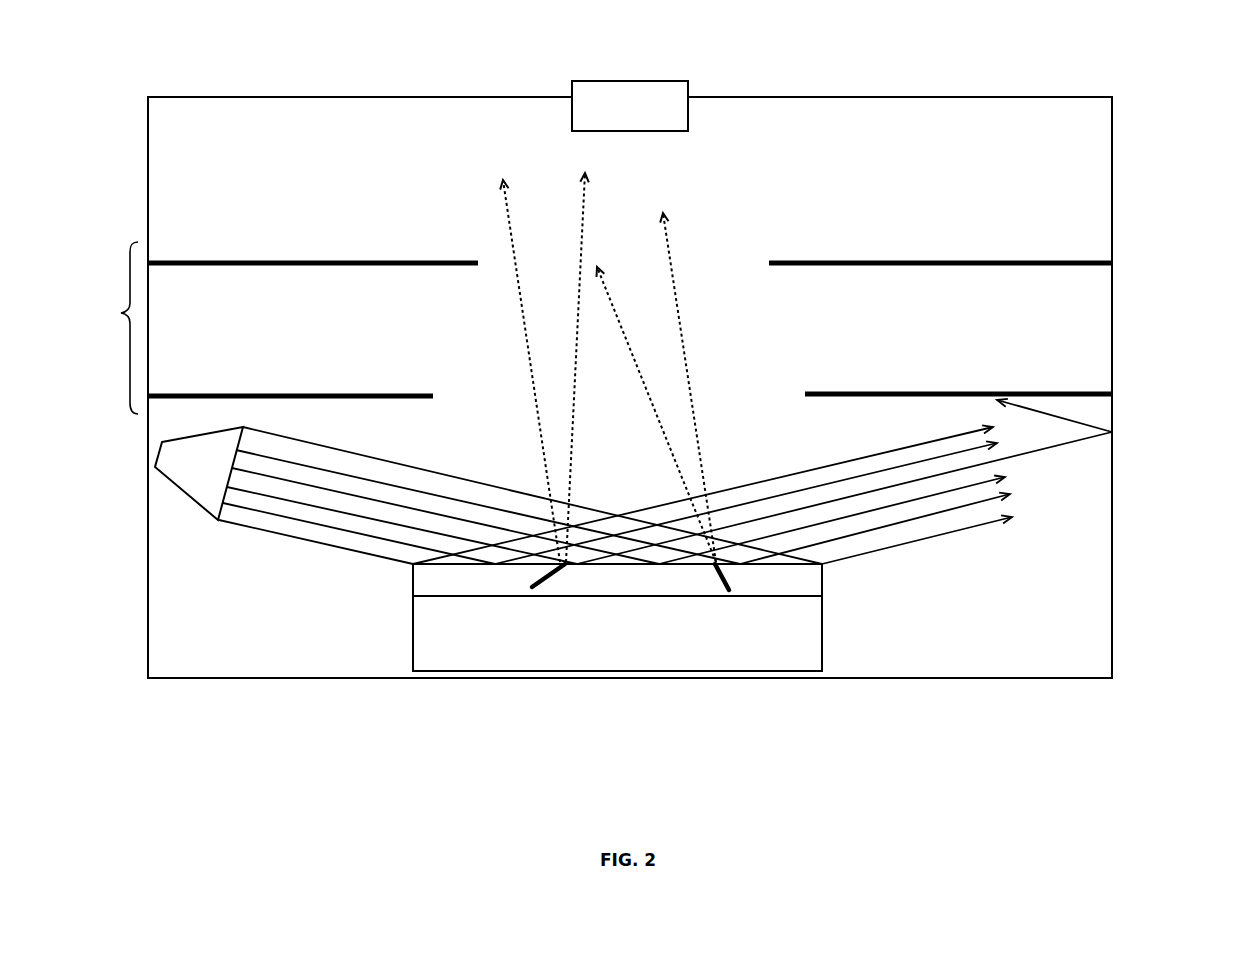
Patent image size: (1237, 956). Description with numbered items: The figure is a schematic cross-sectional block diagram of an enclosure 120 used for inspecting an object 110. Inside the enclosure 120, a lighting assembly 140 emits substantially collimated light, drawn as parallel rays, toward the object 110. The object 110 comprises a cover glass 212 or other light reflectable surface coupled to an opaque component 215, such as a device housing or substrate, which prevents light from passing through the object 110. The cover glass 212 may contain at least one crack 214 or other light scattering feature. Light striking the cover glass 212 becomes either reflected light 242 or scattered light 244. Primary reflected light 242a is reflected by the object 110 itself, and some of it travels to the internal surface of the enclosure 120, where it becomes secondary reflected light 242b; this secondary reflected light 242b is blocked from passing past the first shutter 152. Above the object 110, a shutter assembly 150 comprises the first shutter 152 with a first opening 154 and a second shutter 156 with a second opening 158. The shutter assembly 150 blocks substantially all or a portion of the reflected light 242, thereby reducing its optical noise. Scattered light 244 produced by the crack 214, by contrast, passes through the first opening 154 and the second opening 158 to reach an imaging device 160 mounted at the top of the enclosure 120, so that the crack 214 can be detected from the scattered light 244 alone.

The object 110 is at (822, 628).
The enclosure 120 is at (930, 97).
The lighting assembly 140 is at (155, 466).
The shutter assembly 150 is at (111, 328).
The first shutter 152 is at (1085, 394).
The first opening 154 is at (472, 381).
The second shutter 156 is at (1075, 263).
The second opening 158 is at (478, 238).
The imaging device 160 is at (628, 81).
The cover glass 212 is at (413, 582).
The crack 214 is at (532, 587).
The opaque component 215 is at (413, 622).
The reflected light 242 is at (977, 527).
The primary reflected light 242a is at (1100, 441).
The secondary reflected light 242b is at (1112, 414).
The scattered light 244 is at (683, 363).